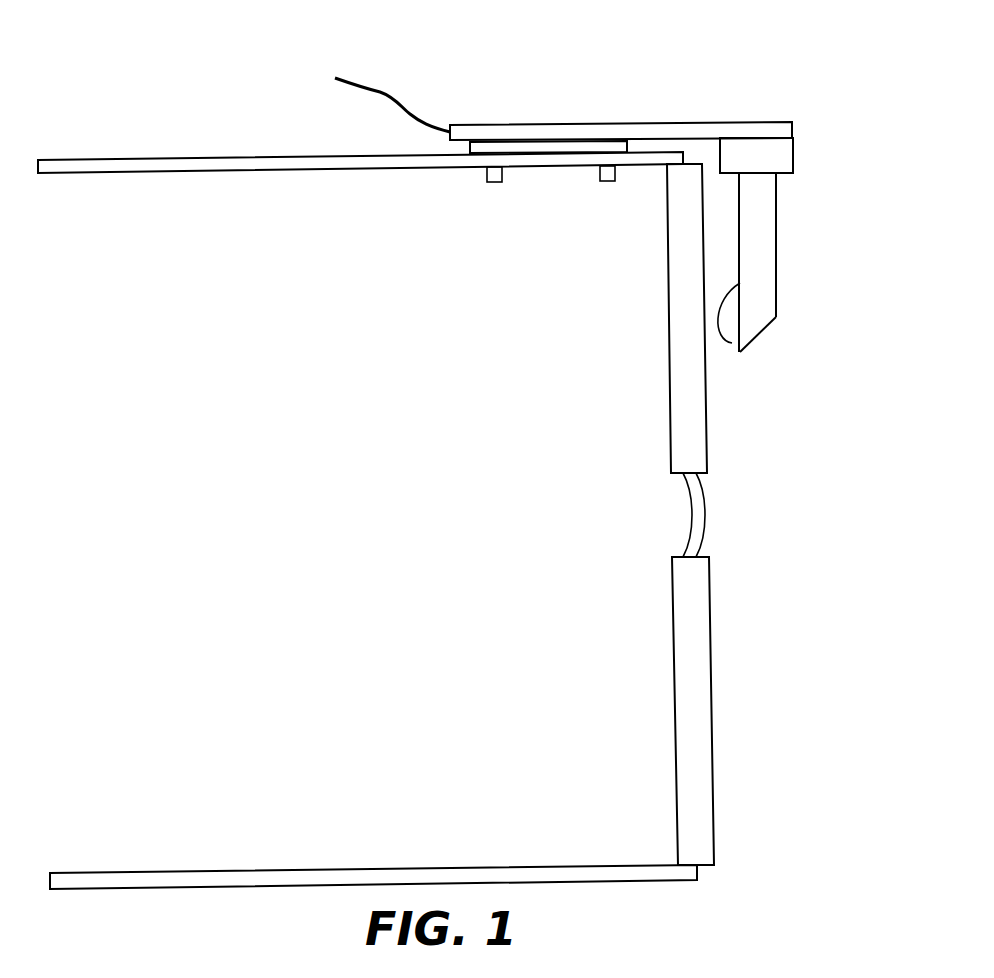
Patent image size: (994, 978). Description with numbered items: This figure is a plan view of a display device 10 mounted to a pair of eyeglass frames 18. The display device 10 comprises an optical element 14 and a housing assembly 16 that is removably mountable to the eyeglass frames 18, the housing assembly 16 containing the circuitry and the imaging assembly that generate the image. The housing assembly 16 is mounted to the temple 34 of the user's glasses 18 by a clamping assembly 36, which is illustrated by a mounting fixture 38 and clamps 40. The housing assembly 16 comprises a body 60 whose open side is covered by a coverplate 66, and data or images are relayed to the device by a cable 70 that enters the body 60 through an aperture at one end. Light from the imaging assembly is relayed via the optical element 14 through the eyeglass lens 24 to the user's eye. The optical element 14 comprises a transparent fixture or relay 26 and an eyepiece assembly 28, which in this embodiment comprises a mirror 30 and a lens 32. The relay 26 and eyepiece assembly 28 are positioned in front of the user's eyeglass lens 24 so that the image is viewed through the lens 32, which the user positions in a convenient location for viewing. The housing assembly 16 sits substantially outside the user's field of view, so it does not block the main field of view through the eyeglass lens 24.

The display device 10 is at (803, 59).
The optical element 14 is at (788, 270).
The housing assembly 16 is at (723, 99).
The eyeglass frames 18 is at (135, 172).
The eyeglass lens 24 is at (697, 455).
The relay 26 is at (762, 223).
The eyepiece assembly 28 is at (752, 346).
The mirror 30 is at (775, 328).
The lens 32 is at (728, 336).
The temple 34 is at (270, 172).
The clamping assembly 36 is at (572, 186).
The mounting fixture 38 is at (470, 148).
The clamps 40 is at (495, 183).
The body 60 is at (657, 122).
The coverplate 66 is at (780, 155).
The cable 70 is at (380, 92).